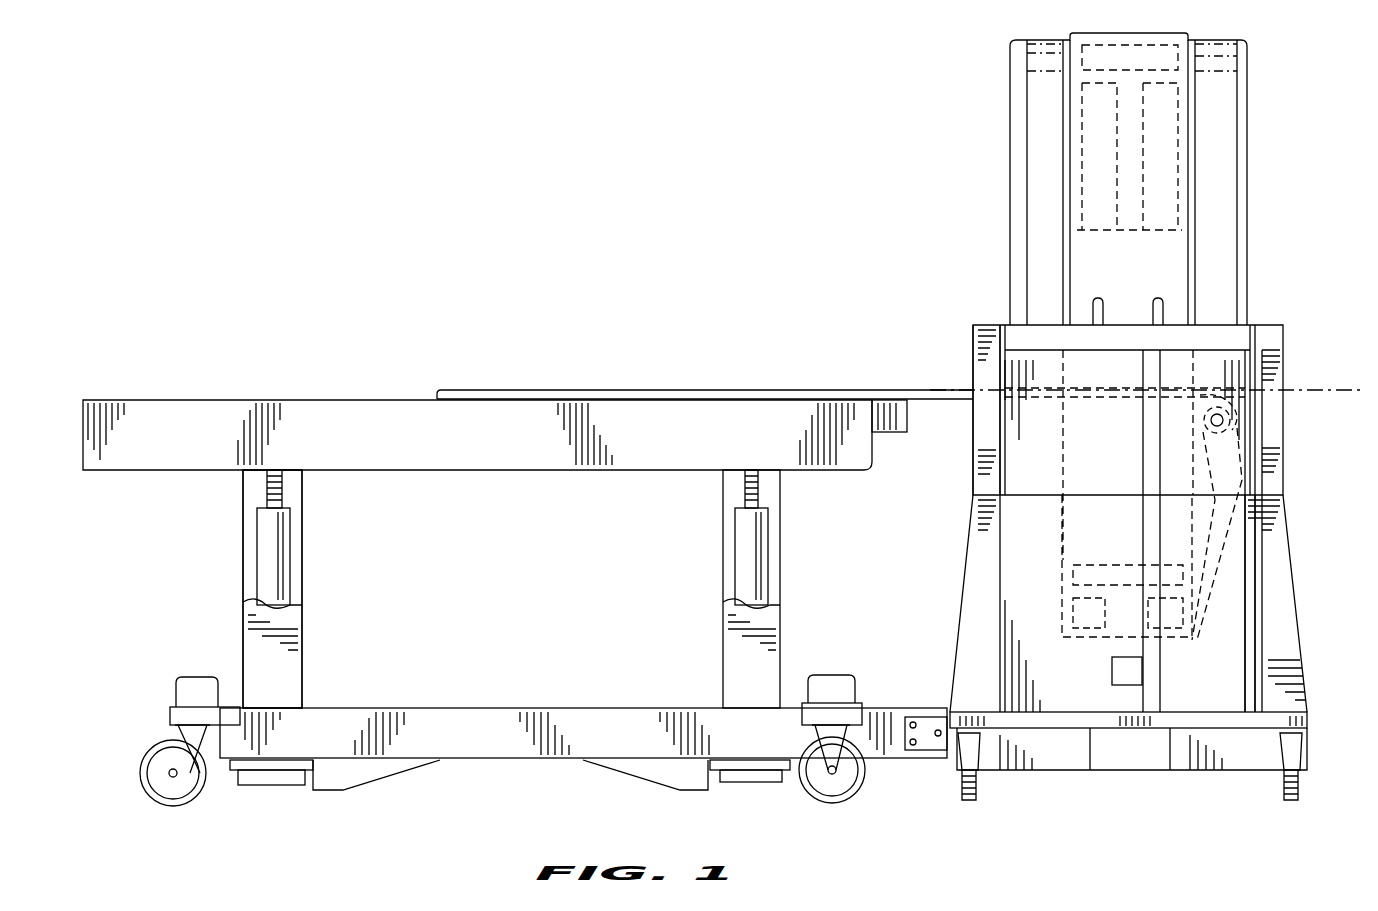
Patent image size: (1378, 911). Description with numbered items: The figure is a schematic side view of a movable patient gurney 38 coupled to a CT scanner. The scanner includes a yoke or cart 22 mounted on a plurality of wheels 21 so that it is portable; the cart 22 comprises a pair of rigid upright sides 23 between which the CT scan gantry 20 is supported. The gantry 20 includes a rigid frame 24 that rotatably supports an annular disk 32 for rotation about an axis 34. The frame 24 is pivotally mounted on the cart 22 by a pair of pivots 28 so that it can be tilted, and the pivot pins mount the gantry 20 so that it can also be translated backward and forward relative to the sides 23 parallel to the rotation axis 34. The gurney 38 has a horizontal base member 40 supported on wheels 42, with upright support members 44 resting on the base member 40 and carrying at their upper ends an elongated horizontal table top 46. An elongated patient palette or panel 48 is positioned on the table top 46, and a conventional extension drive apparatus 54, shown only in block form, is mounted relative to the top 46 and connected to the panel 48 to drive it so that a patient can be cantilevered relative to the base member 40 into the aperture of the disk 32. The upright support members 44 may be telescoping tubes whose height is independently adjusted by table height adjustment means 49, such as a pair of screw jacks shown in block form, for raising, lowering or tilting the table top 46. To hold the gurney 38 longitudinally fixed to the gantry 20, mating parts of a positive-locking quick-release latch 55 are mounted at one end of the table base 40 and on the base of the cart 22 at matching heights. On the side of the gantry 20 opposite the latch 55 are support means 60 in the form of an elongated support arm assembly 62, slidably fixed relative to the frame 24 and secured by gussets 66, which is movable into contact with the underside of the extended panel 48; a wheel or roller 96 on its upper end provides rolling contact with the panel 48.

The CT scan gantry 20 is at (1262, 88).
The wheels 21 is at (962, 795).
The cart 22 is at (1267, 318).
The upright sides 23 is at (1030, 365).
The rigid frame 24 is at (1085, 610).
The pivots 28 is at (1087, 62).
The annular disk 32 is at (1125, 155).
The axis 34 is at (1305, 392).
The gurney 38 is at (243, 584).
The horizontal base member 40 is at (467, 740).
The wheels 42 is at (185, 782).
The upright support members 44 is at (290, 663).
The table top 46 is at (600, 445).
The patient palette 48 is at (628, 388).
The table height adjustment means 49 is at (282, 568).
The extension drive apparatus 54 is at (888, 420).
The latch 55 is at (930, 715).
The support means 60 is at (1195, 512).
The support arm assembly 62 is at (1250, 516).
The gussets 66 is at (1112, 670).
The roller 96 is at (1200, 432).